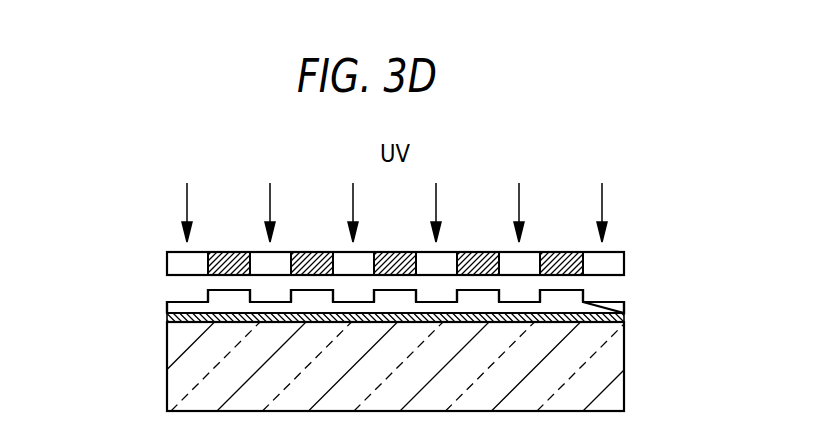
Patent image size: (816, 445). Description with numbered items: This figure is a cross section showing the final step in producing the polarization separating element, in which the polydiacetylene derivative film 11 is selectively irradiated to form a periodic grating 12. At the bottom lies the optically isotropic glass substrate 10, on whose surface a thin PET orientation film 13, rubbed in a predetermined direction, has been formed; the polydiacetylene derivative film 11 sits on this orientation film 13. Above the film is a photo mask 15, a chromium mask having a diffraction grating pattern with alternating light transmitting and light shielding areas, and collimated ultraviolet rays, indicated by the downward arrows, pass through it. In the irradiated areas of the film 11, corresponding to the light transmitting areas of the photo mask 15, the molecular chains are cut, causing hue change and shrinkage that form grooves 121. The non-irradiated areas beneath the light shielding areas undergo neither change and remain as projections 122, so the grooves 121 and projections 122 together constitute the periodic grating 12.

The glass substrate 10 is at (624, 360).
The orientation film 13 is at (623, 315).
The polydiacetylene derivative film 11 is at (585, 300).
The periodic grating 12 is at (339, 289).
The grooves 121 is at (228, 289).
The projections 122 is at (232, 298).
The photo mask 15 is at (604, 251).